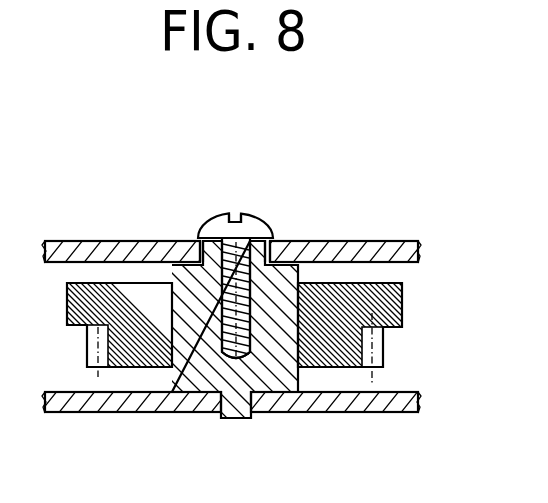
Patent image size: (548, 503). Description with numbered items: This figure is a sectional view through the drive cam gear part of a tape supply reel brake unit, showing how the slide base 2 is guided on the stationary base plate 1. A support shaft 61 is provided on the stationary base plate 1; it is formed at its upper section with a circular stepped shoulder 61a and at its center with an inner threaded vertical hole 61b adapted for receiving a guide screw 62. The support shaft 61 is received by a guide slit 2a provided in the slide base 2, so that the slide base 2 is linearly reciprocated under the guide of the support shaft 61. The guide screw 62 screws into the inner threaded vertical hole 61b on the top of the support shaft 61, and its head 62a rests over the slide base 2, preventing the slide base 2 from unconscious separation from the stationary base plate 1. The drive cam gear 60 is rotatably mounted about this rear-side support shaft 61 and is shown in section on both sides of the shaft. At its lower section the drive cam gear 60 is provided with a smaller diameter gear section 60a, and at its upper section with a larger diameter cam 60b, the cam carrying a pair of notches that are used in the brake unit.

The stationary base plate 1 is at (136, 413).
The slide base 2 is at (122, 250).
The guide slit 2a is at (281, 241).
The drive cam gear 60 is at (403, 302).
The smaller diameter gear section 60a is at (380, 357).
The larger diameter cam 60b is at (58, 280).
The support shaft 61 is at (278, 383).
The circular stepped shoulder 61a is at (294, 242).
The inner threaded vertical hole 61b is at (226, 362).
The guide screw 62 is at (268, 213).
The head of guide screw 62a is at (219, 222).